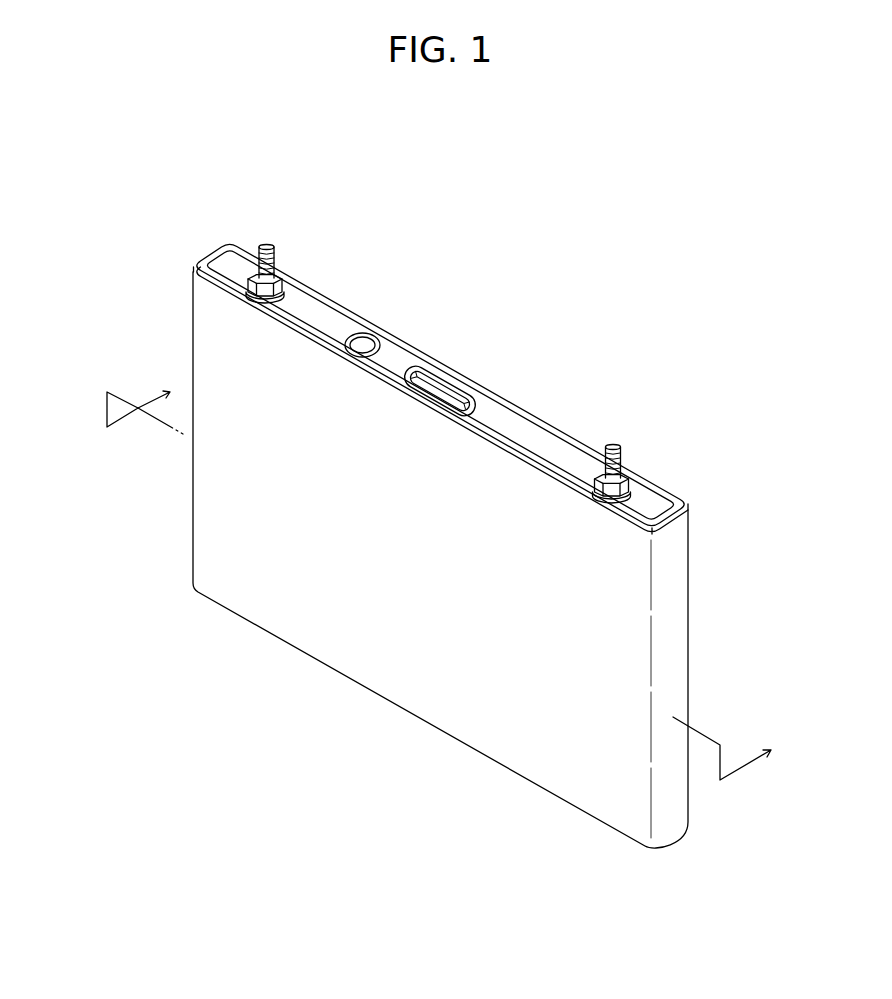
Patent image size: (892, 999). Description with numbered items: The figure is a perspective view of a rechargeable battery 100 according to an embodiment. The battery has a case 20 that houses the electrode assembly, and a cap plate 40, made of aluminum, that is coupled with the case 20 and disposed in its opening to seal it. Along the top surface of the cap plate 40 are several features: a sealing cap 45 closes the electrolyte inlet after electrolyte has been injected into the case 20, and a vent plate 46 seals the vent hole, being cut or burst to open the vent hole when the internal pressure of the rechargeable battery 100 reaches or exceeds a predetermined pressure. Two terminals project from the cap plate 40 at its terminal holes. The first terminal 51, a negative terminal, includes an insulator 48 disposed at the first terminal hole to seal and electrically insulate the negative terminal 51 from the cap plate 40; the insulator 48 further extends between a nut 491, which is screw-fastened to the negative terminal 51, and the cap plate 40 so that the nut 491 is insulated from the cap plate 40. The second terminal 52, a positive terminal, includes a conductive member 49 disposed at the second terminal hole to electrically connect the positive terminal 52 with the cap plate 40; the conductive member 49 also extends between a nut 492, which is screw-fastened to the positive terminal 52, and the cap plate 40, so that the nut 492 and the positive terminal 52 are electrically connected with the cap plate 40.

The rechargeable battery 100 is at (448, 177).
The case 20 is at (366, 653).
The cap plate 40 is at (407, 344).
The sealing cap 45 is at (366, 338).
The vent plate 46 is at (445, 387).
The insulator 48 is at (633, 497).
The conductive member 49 is at (281, 287).
The nut 491 is at (628, 483).
The nut 492 is at (212, 270).
The first terminal (negative terminal) 51 is at (613, 446).
The second terminal (positive terminal) 52 is at (268, 250).